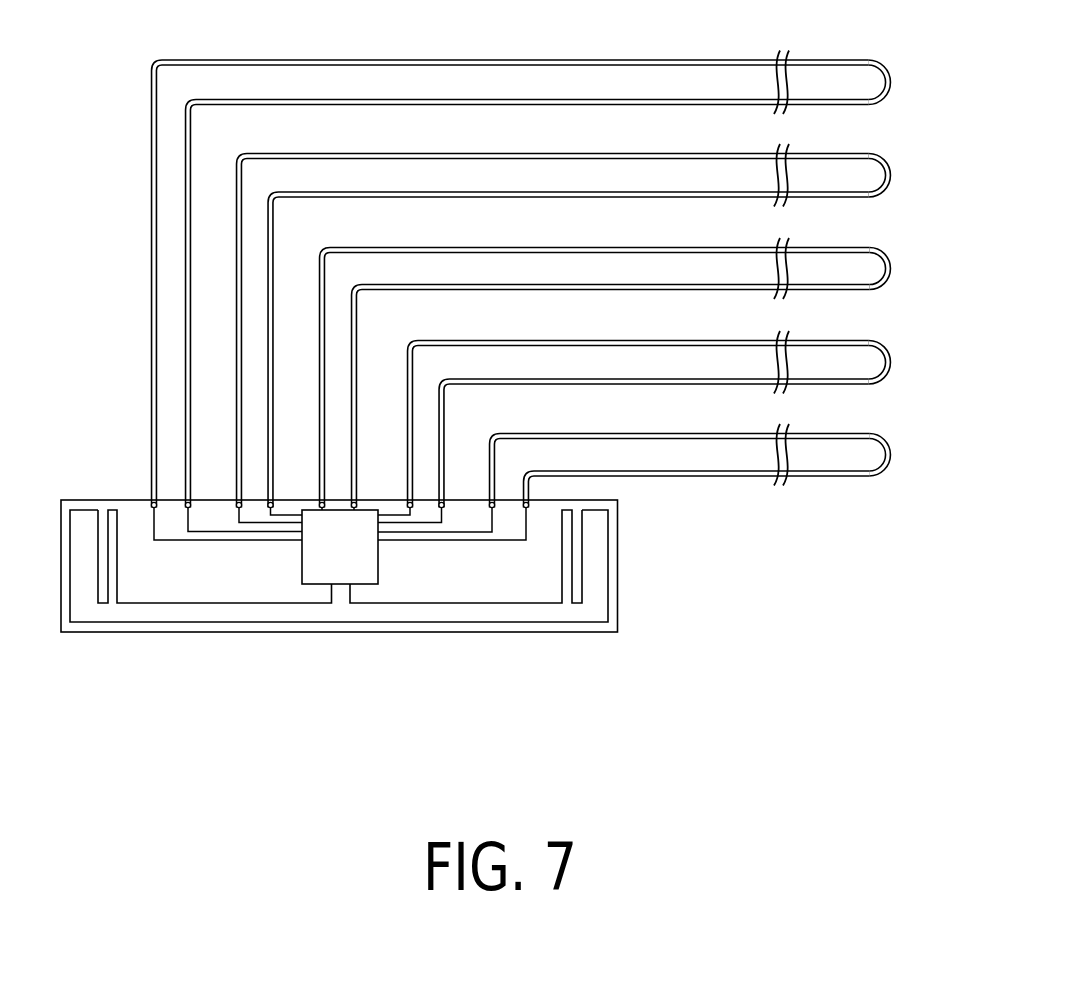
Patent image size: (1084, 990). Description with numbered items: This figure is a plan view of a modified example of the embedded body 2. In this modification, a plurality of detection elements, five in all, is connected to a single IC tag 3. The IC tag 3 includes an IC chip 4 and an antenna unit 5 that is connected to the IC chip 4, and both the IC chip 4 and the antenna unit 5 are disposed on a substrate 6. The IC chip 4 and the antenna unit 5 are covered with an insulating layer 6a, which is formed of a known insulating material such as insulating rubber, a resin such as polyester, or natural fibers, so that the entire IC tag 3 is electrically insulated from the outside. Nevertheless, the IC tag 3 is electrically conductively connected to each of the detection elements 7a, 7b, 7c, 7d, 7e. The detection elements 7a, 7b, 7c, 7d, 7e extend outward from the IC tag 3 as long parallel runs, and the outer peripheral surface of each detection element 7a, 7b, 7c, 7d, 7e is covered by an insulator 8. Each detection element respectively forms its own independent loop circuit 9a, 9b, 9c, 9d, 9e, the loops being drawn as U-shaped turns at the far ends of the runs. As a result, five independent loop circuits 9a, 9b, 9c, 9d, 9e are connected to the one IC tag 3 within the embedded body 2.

The embedded body 2 is at (698, 660).
The IC tag 3 is at (538, 653).
The IC chip 4 is at (308, 559).
The antenna unit 5 is at (410, 623).
The substrate 6 is at (192, 633).
The insulating layer 6a is at (130, 513).
The detection element 7a is at (612, 433).
The detection element 7b is at (612, 340).
The detection element 7c is at (612, 247).
The detection element 7d is at (612, 153).
The detection element 7e is at (612, 60).
The insulator 8 is at (672, 477).
The loop circuit 9a is at (832, 476).
The loop circuit 9b is at (832, 384).
The loop circuit 9c is at (832, 290).
The loop circuit 9d is at (832, 198).
The loop circuit 9e is at (832, 105).